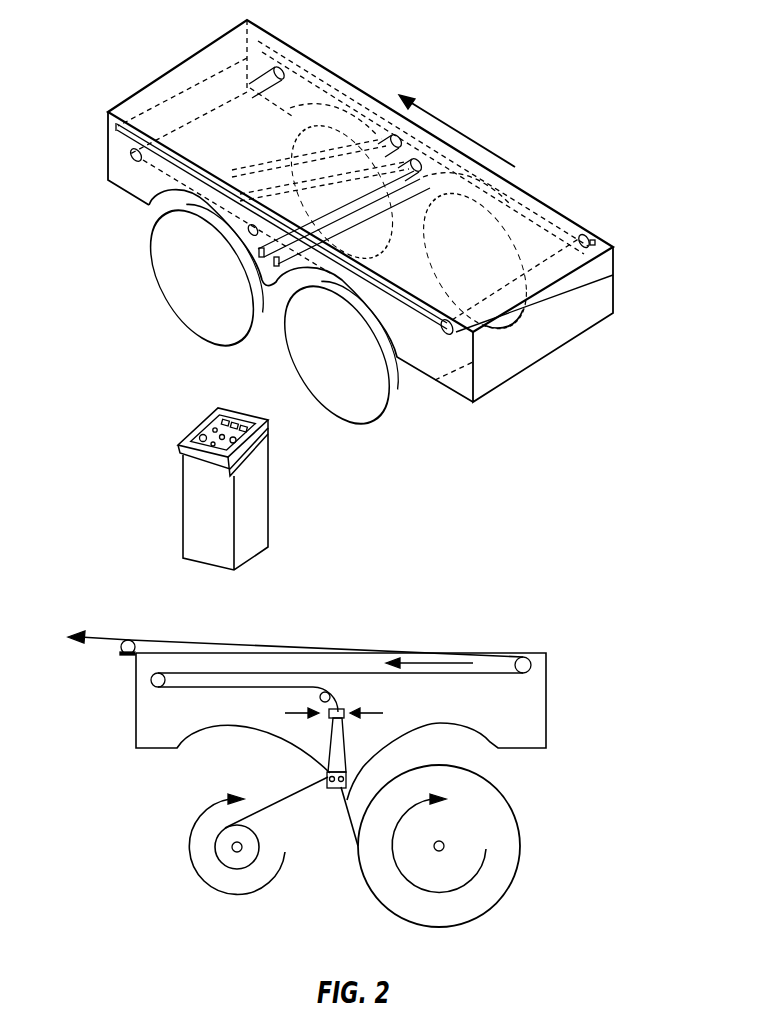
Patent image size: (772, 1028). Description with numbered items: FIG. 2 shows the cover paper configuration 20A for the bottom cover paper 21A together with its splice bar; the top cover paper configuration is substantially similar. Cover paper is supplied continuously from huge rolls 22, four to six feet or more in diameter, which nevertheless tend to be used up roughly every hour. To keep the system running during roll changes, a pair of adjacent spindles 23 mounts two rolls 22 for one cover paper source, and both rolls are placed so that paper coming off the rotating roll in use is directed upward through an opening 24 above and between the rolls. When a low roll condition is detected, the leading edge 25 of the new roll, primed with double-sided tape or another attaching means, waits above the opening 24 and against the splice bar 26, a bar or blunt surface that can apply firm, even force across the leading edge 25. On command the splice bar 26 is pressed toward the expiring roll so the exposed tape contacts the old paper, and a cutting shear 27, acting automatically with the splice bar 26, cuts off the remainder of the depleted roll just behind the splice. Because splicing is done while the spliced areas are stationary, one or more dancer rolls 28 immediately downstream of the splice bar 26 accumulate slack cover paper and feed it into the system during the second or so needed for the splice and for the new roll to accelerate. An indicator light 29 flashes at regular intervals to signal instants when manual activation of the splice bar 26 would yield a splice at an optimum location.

The cover paper configuration 20A is at (563, 72).
The bottom cover paper 21A is at (98, 641).
The rolls 22 is at (167, 262).
The spindles 23 is at (446, 844).
The opening 24 is at (422, 180).
The leading edge 25 is at (343, 742).
The splice bar 26 is at (323, 710).
The cutting shear 27 is at (324, 760).
The dancer rolls 28 is at (563, 257).
The indicator light 29 is at (205, 425).